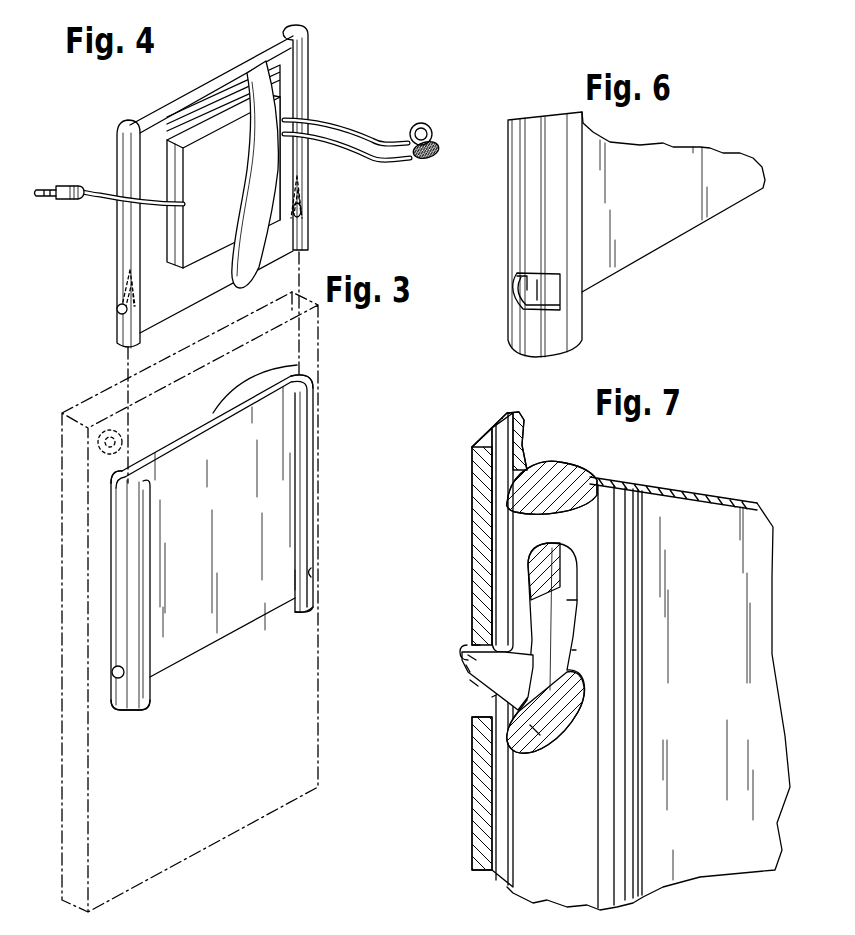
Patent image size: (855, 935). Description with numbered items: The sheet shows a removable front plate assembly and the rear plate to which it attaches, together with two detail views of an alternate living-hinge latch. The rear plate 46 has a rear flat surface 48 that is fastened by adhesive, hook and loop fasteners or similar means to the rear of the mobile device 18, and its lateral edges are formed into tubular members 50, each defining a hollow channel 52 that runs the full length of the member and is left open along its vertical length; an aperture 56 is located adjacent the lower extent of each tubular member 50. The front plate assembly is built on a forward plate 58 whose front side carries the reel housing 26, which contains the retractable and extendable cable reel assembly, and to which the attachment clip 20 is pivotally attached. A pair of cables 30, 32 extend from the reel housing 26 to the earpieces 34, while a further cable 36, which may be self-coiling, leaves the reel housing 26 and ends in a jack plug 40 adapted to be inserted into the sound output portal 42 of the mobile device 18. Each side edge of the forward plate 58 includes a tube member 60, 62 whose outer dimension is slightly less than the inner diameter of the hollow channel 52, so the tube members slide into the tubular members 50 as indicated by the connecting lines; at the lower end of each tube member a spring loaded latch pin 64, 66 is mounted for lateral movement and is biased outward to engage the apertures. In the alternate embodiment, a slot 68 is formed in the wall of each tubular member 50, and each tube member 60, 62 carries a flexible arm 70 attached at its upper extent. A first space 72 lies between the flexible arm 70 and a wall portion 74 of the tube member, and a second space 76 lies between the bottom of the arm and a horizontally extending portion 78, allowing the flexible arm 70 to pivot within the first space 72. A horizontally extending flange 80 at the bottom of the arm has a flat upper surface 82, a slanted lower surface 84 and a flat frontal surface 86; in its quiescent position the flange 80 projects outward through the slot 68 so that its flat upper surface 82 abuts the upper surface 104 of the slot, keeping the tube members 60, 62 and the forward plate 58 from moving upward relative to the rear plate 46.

In FIG. 3, the mobile device 18 is at (290, 306).
In FIG. 4, the attachment clip 20 is at (282, 133).
In FIG. 4, the reel housing 26 is at (272, 110).
In FIG. 4, the cable 30 is at (363, 135).
In FIG. 4, the cable 32 is at (363, 161).
In FIG. 4, the earpieces 34 is at (417, 127).
In FIG. 4, the cable 36 is at (107, 200).
In FIG. 4, the jack plug 40 is at (72, 187).
In FIG. 3, the sound output portal 42 is at (88, 412).
In FIG. 3, the rear plate 46 is at (243, 510).
In FIG. 6, the rear plate 46 is at (640, 250).
In FIG. 3, the rear flat surface 48 is at (213, 413).
In FIG. 3, the tubular members 50 is at (120, 580).
In FIG. 7, the tubular members 50 is at (472, 462).
In FIG. 3, the hollow channel 52 is at (111, 472).
In FIG. 7, the hollow channel 52 is at (527, 440).
In FIG. 3, the aperture 56 is at (113, 672).
In FIG. 4, the forward plate 58 is at (282, 67).
In FIG. 7, the forward plate 58 is at (738, 613).
In FIG. 4, the tube member 60 is at (123, 122).
In FIG. 7, the tube member 60 is at (632, 497).
In FIG. 4, the tube member 62 is at (302, 26).
In FIG. 7, the tube member 62 is at (643, 541).
In FIG. 4, the spring loaded latch pin 64 is at (117, 310).
In FIG. 4, the spring loaded latch pin 66 is at (311, 208).
In FIG. 6, the slot 68 is at (510, 291).
In FIG. 7, the slot 68 is at (483, 698).
In FIG. 7, the flexible arm 70 is at (518, 583).
In FIG. 7, the first space 72 is at (567, 600).
In FIG. 7, the wall portion 74 is at (572, 650).
In FIG. 7, the second space 76 is at (500, 753).
In FIG. 7, the horizontally extending portion 78 is at (537, 730).
In FIG. 7, the horizontally extending flange 80 is at (477, 663).
In FIG. 7, the flat upper surface 82 is at (472, 645).
In FIG. 7, the slanted lower surface 84 is at (472, 684).
In FIG. 7, the flat frontal surface 86 is at (470, 672).
In FIG. 6, the upper surface of slot 104 is at (527, 280).
In FIG. 7, the upper surface of slot 104 is at (465, 652).